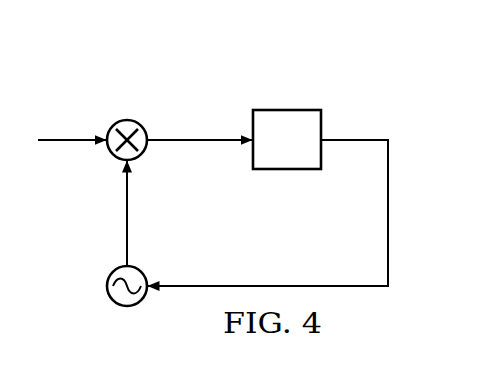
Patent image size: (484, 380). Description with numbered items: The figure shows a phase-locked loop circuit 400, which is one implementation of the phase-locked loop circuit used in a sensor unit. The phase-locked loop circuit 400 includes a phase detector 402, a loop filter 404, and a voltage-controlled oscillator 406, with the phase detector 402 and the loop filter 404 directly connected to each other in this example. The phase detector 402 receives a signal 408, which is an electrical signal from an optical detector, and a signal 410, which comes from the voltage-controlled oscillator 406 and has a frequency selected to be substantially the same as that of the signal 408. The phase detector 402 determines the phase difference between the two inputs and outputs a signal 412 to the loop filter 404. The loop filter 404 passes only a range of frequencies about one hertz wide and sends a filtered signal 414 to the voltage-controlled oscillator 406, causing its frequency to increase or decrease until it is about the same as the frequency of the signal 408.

The phase-locked loop circuit 400 is at (362, 73).
The phase detector 402 is at (124, 121).
The loop filter 404 is at (287, 109).
The voltage-controlled oscillator 406 is at (110, 295).
The signal 408 is at (70, 138).
The signal 410 is at (125, 220).
The signal 412 is at (193, 138).
The filtered signal 414 is at (390, 218).